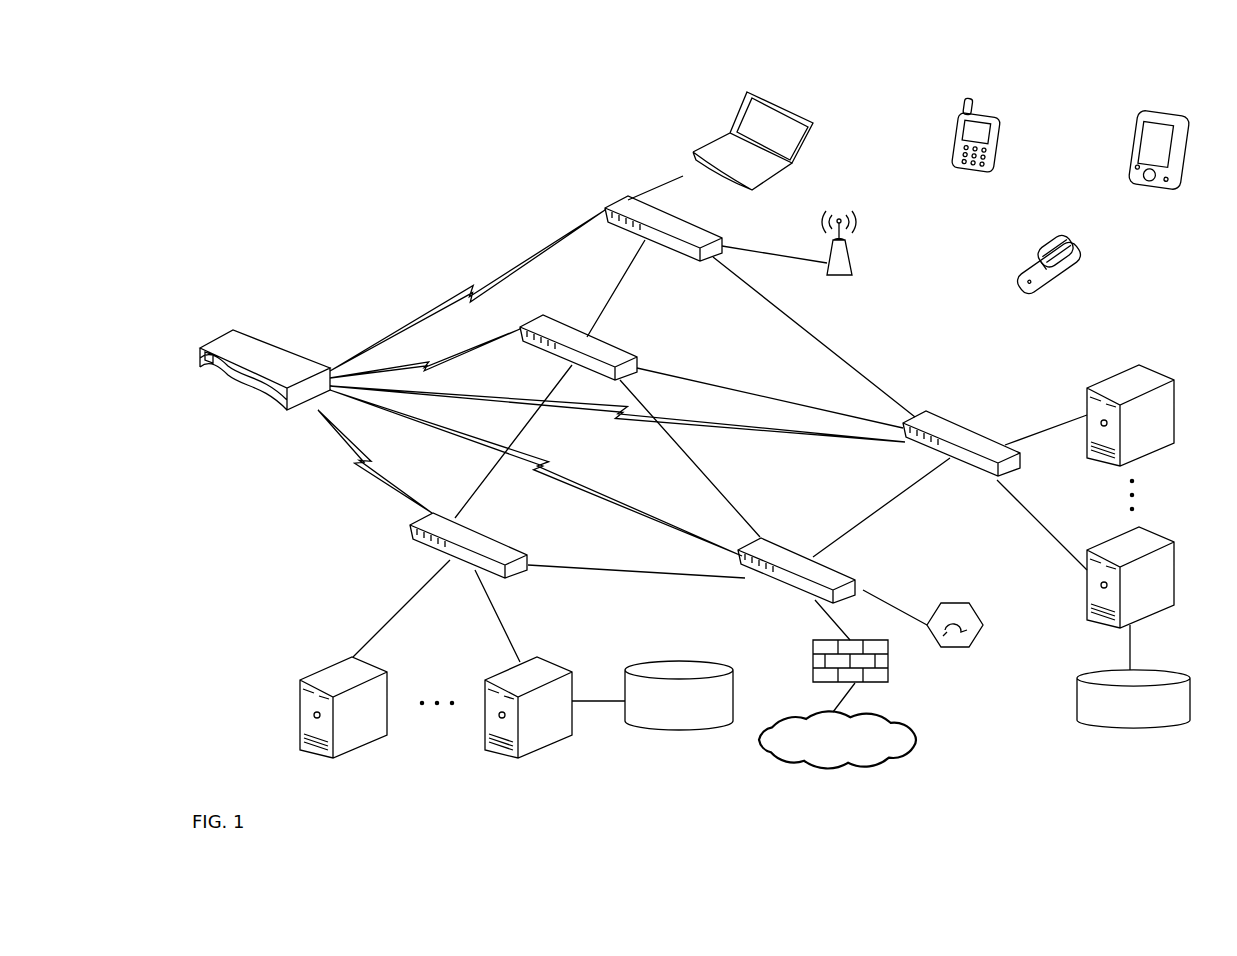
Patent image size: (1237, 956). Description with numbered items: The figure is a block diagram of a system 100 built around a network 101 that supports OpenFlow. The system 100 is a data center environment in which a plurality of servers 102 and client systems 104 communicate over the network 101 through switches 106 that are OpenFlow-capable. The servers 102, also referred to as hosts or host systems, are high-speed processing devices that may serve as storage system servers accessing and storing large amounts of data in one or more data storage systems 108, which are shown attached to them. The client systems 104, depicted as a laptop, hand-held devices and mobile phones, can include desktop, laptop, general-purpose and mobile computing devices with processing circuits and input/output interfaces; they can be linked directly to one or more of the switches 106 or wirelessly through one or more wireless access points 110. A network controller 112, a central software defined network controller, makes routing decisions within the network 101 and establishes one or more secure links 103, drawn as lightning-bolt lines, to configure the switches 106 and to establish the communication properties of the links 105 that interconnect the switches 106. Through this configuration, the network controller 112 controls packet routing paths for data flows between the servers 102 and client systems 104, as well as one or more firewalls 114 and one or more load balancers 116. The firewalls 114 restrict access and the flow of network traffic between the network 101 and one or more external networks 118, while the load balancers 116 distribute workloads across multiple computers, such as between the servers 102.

The system 100 is at (267, 135).
The network 101 is at (524, 205).
The server 102 is at (370, 666).
The secure link 103 is at (460, 293).
The client system 104 is at (800, 112).
The link 105 is at (642, 264).
The switch 106 is at (727, 245).
The data storage system 108 is at (907, 695).
The wireless access point 110 is at (858, 258).
The network controller 112 is at (246, 336).
The firewall 114 is at (812, 642).
The load balancer 116 is at (960, 604).
The external network 118 is at (837, 739).